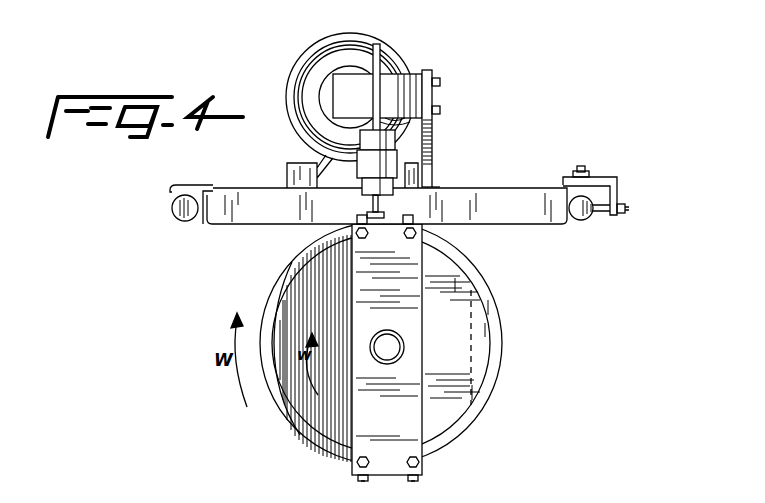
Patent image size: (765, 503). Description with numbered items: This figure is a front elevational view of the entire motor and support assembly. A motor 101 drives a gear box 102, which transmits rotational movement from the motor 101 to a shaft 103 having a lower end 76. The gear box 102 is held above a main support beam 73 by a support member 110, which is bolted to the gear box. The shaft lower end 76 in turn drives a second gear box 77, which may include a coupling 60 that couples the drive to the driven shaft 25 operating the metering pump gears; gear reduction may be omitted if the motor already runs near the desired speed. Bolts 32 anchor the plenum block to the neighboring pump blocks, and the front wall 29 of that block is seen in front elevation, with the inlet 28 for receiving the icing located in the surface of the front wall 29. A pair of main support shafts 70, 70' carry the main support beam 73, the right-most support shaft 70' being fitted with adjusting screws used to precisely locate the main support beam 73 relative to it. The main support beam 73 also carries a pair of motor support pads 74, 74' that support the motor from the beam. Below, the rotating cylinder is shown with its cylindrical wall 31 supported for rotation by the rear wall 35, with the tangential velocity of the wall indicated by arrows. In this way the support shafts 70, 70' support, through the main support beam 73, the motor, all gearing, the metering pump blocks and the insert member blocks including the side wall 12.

The motor 101 is at (302, 56).
The gear box 102 is at (413, 87).
The shaft 103 is at (380, 55).
The support member 110 is at (427, 97).
The lower end of shaft 76 is at (396, 136).
The gear box 77 is at (398, 162).
The motor support pad 74 is at (282, 169).
The motor support pad 74' is at (444, 169).
The coupling 60 is at (433, 187).
The main support beam 73 is at (524, 218).
The main support shaft 70 is at (169, 228).
The main support shaft 70' is at (610, 214).
The driven shaft 25 is at (376, 206).
The bolts 32 is at (353, 232).
The front wall 29 is at (398, 294).
The rear wall 35 is at (340, 333).
The side wall 12 is at (460, 370).
The inlet 28 is at (393, 348).
The cylindrical wall 31 is at (468, 435).